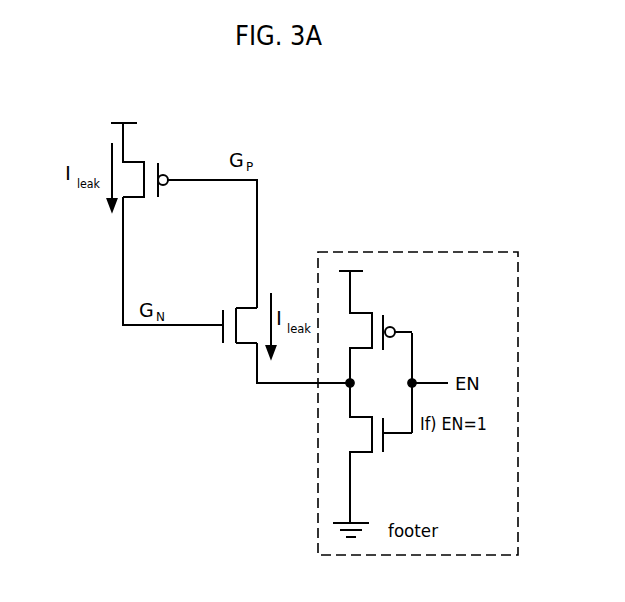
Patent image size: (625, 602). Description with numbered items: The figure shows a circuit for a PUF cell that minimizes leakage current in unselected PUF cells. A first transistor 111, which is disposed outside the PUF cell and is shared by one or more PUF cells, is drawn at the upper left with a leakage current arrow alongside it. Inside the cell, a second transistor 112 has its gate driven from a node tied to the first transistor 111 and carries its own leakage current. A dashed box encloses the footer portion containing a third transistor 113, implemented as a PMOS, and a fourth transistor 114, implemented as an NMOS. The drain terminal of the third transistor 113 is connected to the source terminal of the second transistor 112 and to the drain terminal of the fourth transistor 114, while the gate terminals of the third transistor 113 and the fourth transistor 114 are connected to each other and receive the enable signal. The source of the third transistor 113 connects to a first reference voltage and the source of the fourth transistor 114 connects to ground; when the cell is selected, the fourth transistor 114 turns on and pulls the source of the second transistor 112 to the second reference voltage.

The first transistor 111 is at (133, 160).
The second transistor 112 is at (247, 308).
The third transistor 113 is at (360, 313).
The fourth transistor 114 is at (360, 452).